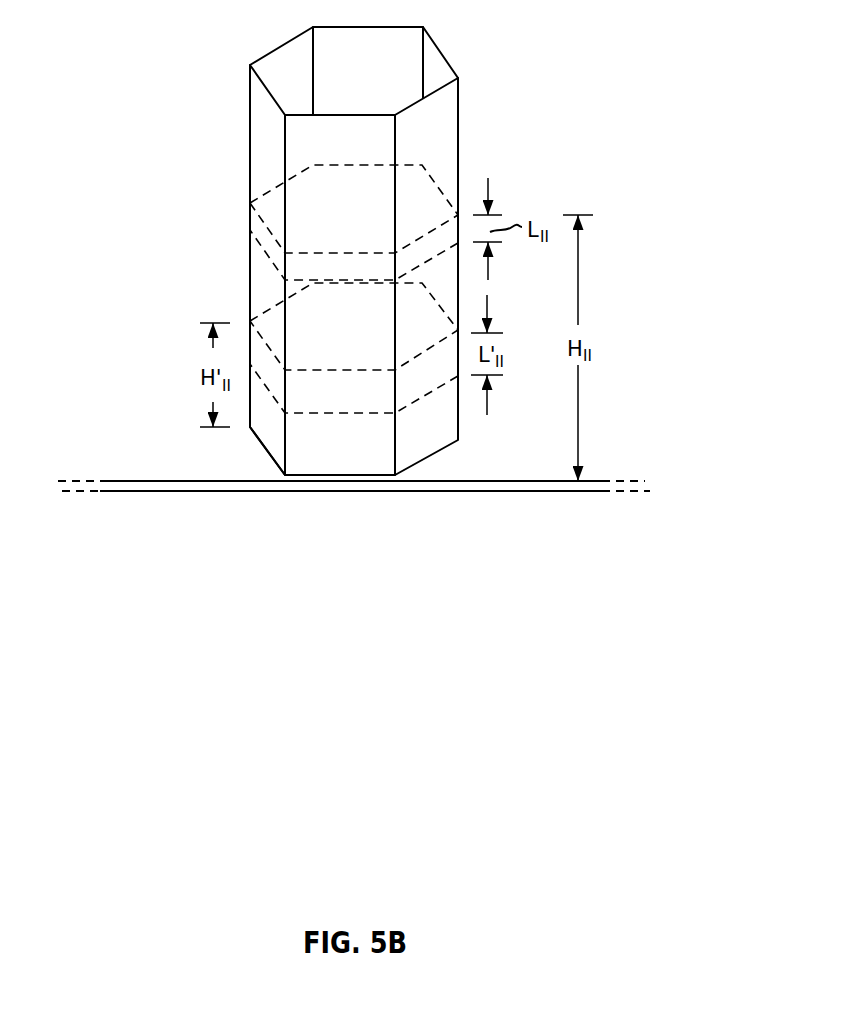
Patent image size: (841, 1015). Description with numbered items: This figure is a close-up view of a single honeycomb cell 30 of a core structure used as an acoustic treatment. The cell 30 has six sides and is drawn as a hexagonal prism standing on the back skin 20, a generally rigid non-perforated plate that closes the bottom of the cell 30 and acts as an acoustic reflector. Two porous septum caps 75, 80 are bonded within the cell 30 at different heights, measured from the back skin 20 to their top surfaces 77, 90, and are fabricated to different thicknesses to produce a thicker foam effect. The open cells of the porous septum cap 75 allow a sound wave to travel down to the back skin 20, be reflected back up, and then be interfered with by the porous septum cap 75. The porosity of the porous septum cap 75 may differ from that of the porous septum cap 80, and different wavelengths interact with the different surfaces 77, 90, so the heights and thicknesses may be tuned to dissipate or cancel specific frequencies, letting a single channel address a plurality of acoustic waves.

The cell 30 is at (443, 119).
The surface of porous septum cap 77 is at (298, 202).
The porous septum cap 75 is at (250, 222).
The surface of porous septum cap 90 is at (302, 317).
The porous septum cap 80 is at (277, 397).
The back skin 20 is at (612, 481).